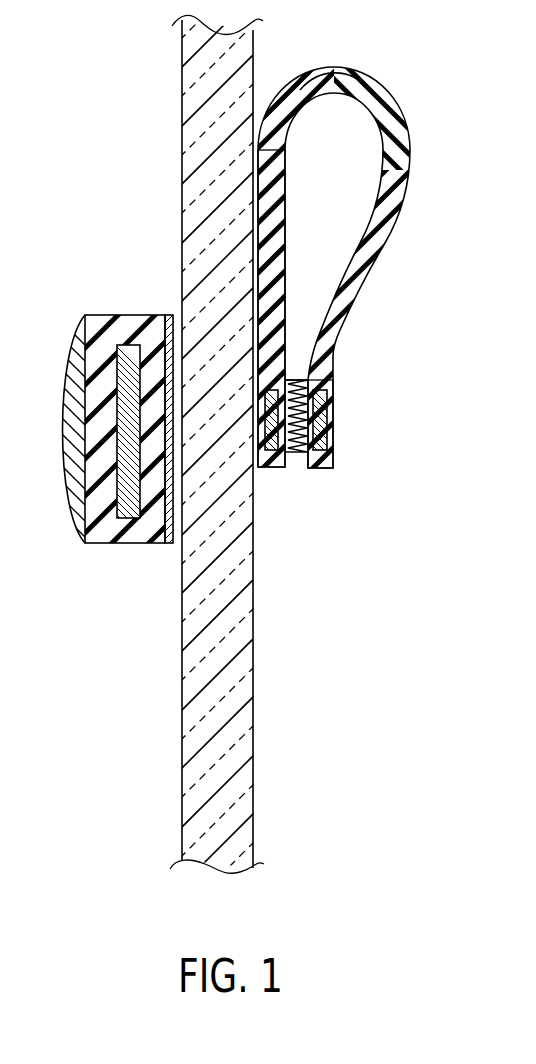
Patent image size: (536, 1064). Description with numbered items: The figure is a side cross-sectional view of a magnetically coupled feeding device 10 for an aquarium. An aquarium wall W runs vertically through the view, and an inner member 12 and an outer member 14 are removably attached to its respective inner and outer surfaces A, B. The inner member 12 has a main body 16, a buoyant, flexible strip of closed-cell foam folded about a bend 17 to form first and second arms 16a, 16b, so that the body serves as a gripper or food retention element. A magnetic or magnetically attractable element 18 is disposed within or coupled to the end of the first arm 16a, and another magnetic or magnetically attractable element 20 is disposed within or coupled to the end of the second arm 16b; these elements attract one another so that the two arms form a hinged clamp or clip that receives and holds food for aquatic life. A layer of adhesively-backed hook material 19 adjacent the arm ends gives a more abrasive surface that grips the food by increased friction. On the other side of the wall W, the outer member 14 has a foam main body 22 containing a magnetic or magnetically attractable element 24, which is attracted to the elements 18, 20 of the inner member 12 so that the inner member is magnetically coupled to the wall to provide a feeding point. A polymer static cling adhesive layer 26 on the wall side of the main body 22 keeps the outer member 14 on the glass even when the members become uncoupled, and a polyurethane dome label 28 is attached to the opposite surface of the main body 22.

The magnetically coupled feeding device 10 is at (110, 570).
The inner member 12 is at (425, 58).
The outer member 14 is at (87, 258).
The main body 16 is at (410, 160).
The first arm 16a is at (265, 468).
The second arm 16b is at (325, 468).
The bend 17 is at (344, 67).
The magnetic or magnetically attractable element 18 is at (285, 458).
The layer of adhesively-backed hook material 19 is at (292, 379).
The magnetic or magnetically attractable element 20 is at (333, 425).
The main body 22 is at (122, 315).
The magnetic or magnetically attractable element 24 is at (143, 543).
The static cling adhesive layer 26 is at (169, 315).
The dome label 28 is at (72, 366).
The inner surface A is at (253, 605).
The outer surface B is at (182, 782).
The aquarium wall W is at (229, 700).